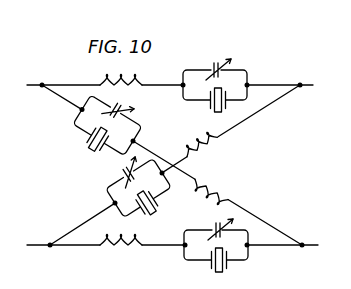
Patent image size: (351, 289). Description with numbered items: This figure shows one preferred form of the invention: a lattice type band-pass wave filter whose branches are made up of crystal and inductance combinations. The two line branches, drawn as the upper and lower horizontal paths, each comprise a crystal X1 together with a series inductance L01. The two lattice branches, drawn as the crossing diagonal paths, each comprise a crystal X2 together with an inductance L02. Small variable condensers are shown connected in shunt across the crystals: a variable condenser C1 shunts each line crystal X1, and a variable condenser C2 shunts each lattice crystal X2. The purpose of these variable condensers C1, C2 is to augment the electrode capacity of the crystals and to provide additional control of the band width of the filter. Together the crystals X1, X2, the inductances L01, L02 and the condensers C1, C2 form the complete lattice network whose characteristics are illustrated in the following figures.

The variable condenser C1 is at (213, 65).
The crystal X1 is at (211, 105).
The variable condenser C2 is at (111, 114).
The crystal X2 is at (90, 146).
The series inductance L01 is at (131, 72).
The inductance L02 is at (209, 155).